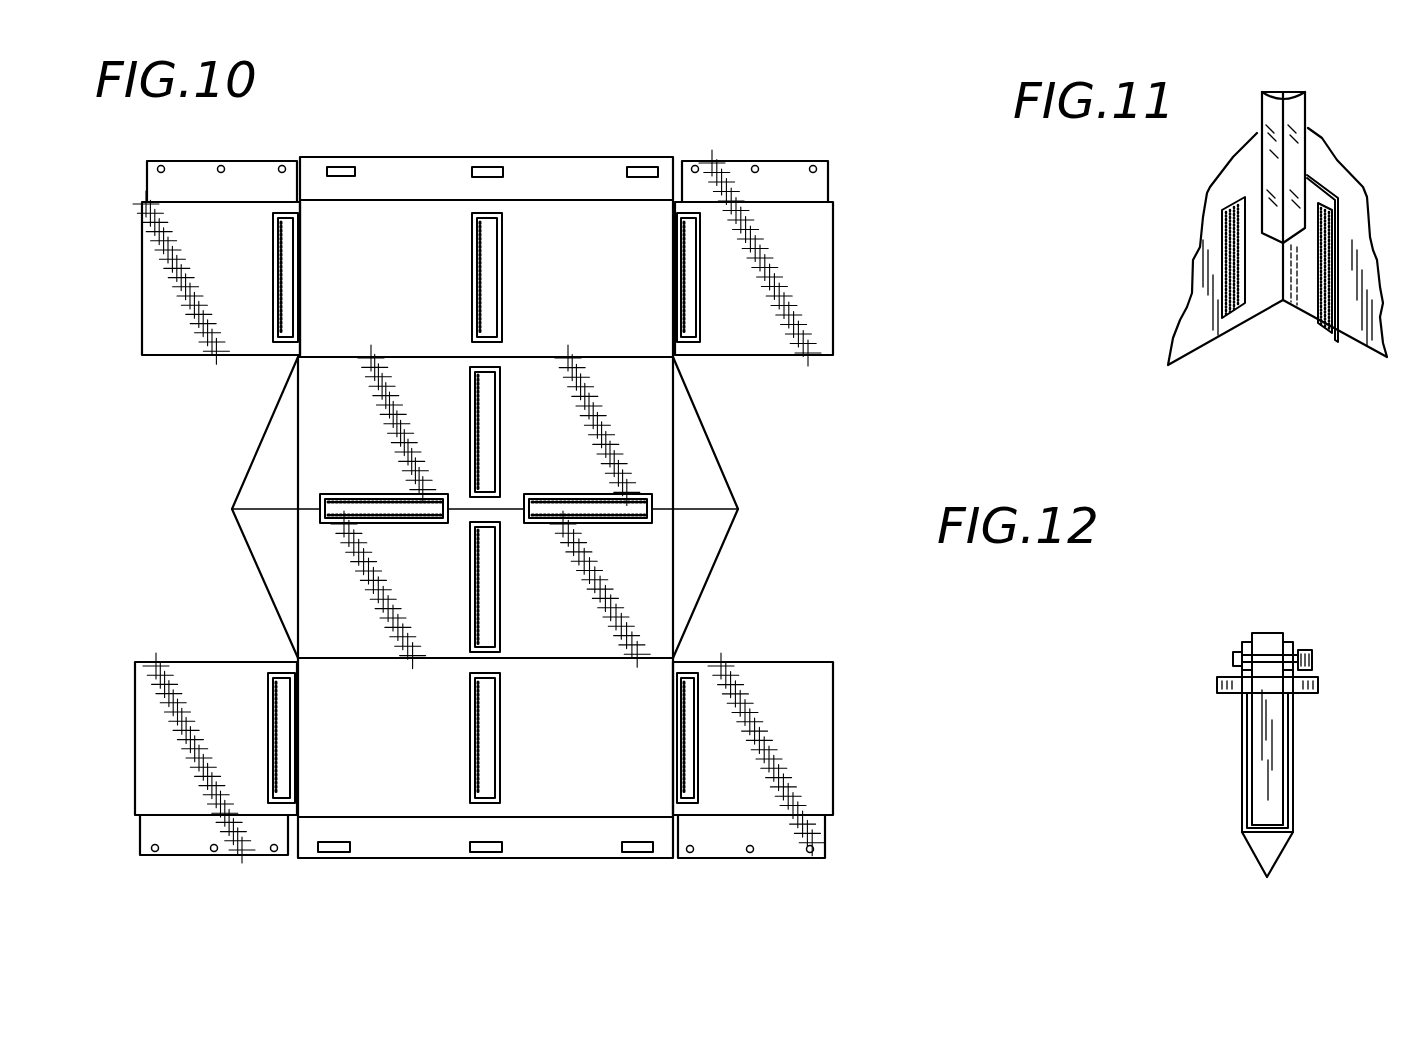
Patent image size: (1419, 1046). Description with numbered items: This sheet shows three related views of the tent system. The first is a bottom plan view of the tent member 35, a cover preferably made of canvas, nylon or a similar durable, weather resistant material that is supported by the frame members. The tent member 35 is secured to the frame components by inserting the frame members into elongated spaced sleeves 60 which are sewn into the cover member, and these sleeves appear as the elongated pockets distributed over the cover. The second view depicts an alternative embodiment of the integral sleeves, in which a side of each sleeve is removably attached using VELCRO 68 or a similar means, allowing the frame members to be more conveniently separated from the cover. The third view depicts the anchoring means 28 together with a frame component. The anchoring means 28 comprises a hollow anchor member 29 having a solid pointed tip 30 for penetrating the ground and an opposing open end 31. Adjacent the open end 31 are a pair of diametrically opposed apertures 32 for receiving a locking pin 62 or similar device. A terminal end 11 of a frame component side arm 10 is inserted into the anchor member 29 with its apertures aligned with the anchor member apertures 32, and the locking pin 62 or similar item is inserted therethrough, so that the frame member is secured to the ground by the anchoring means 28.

In FIG. 11, the side arm 10 is at (1300, 112).
In FIG. 12, the side arm 10 is at (1250, 640).
In FIG. 12, the terminal free end 11 is at (1252, 800).
In FIG. 12, the anchoring means 28 is at (1340, 583).
In FIG. 12, the hollow anchor member 29 is at (1295, 725).
In FIG. 12, the solid pointed tip 30 is at (1283, 850).
In FIG. 12, the open end 31 is at (1237, 695).
In FIG. 12, the apertures 32 is at (1237, 654).
In FIG. 10, the tent member 35 is at (607, 158).
In FIG. 10, the elongated spaced sleeves 60 is at (675, 252).
In FIG. 12, the locking pin 62 is at (1313, 657).
In FIG. 10, the VELCRO 68 is at (697, 752).
In FIG. 11, the VELCRO 68 is at (1322, 300).